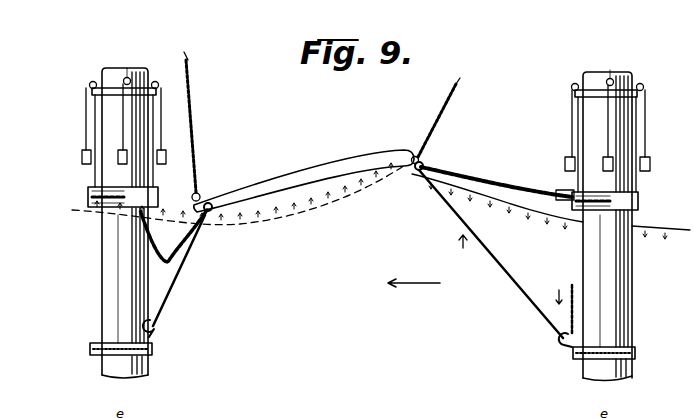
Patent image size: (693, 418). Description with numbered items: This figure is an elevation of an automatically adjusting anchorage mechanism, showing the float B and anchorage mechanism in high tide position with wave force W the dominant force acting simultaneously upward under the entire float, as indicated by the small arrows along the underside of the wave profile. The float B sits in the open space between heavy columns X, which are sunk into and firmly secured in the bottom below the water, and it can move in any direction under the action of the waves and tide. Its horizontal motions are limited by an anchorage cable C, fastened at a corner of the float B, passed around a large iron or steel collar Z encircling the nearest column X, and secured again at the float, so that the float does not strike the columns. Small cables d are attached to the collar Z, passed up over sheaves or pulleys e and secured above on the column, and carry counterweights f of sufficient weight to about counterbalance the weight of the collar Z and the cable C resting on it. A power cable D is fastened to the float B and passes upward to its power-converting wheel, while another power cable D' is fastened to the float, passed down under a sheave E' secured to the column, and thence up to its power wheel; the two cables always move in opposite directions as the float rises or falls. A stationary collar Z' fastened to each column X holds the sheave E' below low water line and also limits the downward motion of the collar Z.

The column X is at (125, 223).
The sheaves or pulleys e is at (93, 82).
The small cables d is at (84, 119).
The counterweights f is at (82, 165).
The collar Z is at (379, 199).
The power cable D is at (322, 126).
The float B is at (304, 181).
The wave force W is at (246, 241).
The anchorage cable C is at (454, 174).
The power cable D' is at (351, 254).
The sheave or pulley E' is at (357, 339).
The stationary collar Z' is at (374, 354).